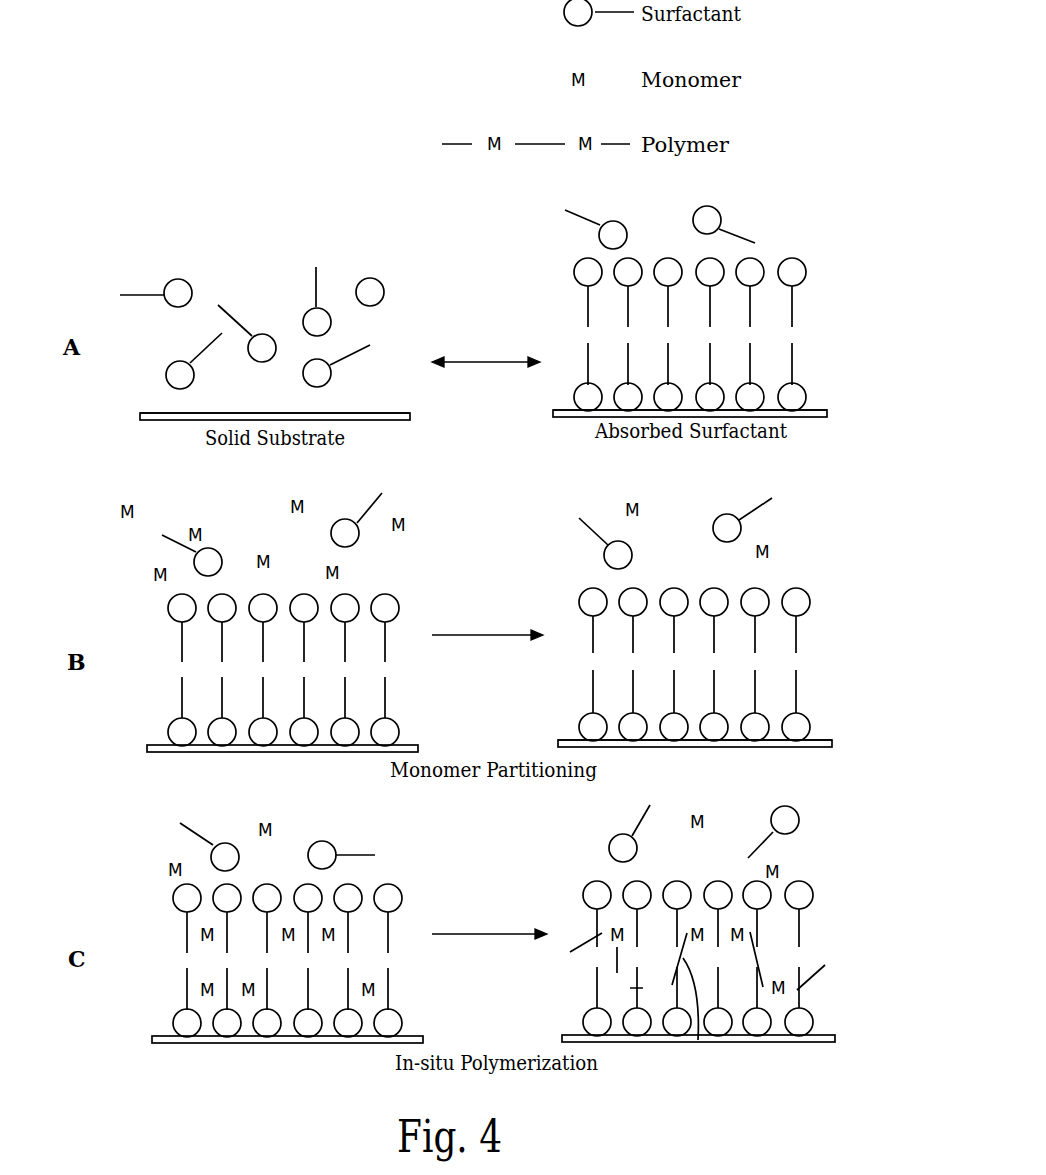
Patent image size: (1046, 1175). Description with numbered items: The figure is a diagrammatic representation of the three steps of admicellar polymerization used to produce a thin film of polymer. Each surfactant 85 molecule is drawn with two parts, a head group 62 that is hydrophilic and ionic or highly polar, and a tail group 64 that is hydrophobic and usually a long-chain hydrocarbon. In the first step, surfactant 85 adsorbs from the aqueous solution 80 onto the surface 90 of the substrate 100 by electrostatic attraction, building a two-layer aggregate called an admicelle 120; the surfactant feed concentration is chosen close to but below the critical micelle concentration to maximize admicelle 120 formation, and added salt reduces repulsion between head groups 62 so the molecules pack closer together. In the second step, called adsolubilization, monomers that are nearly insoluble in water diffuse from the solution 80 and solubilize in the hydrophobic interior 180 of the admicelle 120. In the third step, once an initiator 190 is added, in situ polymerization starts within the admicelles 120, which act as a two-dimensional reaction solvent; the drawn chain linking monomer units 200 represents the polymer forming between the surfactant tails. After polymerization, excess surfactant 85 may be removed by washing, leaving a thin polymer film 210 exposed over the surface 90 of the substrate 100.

The head group 62 is at (172, 278).
The tail group 64 is at (135, 293).
The solution 80 is at (276, 207).
The surfactant 85 is at (380, 280).
The surface 90 is at (147, 414).
The substrate 100 is at (397, 420).
The admicelle 120 is at (810, 646).
The hydrophobic interior 180 is at (797, 678).
The initiator 190 is at (585, 992).
The polymer chain 200 is at (825, 965).
The polymer film 210 is at (698, 1040).